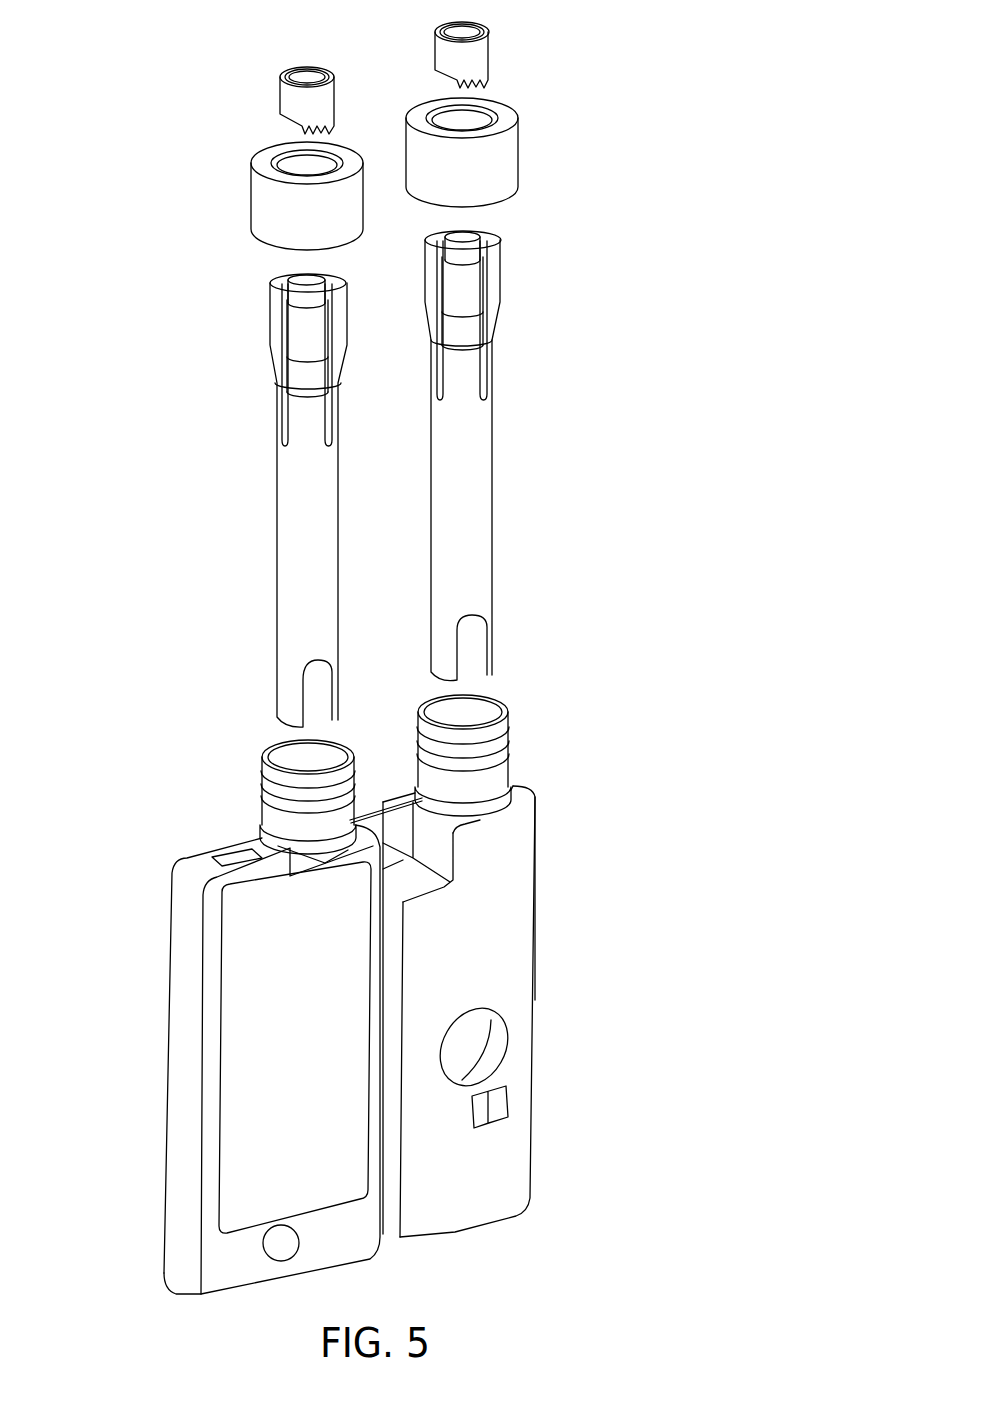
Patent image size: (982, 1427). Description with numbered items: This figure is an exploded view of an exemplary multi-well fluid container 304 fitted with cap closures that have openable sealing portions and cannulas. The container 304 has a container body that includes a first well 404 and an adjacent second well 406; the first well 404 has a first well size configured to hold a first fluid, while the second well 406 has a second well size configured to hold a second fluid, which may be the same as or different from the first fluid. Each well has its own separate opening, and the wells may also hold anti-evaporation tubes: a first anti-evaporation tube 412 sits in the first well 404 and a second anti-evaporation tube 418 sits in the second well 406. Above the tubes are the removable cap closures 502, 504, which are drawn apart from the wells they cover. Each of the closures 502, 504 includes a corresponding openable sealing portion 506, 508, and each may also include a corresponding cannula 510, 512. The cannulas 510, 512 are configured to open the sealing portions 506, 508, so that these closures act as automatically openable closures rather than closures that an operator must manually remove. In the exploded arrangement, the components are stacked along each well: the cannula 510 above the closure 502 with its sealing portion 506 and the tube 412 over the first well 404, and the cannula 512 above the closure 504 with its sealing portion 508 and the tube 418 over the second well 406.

The container 304 is at (537, 865).
The first well 404 is at (163, 1043).
The second well 406 is at (535, 975).
The first anti-evaporation tube 412 is at (277, 483).
The second anti-evaporation tube 418 is at (492, 433).
The cap closure 502 is at (252, 198).
The cap closure 504 is at (518, 150).
The sealing portion 506 is at (302, 170).
The sealing portion 508 is at (462, 125).
The cannula 510 is at (280, 92).
The cannula 512 is at (492, 60).